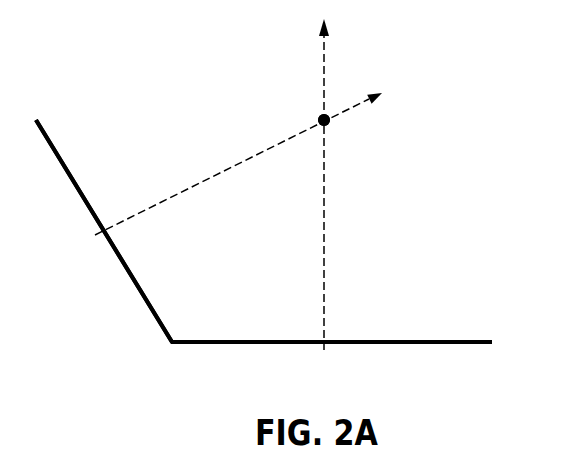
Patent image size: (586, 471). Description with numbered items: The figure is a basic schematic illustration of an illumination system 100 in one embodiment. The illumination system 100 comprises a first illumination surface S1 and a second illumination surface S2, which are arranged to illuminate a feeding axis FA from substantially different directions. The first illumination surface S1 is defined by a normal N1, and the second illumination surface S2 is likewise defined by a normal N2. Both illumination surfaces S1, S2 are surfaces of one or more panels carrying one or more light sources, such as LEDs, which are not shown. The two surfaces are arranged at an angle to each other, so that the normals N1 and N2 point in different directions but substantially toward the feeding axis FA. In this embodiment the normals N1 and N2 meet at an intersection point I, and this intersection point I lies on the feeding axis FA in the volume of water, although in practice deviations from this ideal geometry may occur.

The illumination system 100 is at (459, 139).
The first illumination surface S1 is at (335, 341).
The second illumination surface S2 is at (108, 230).
The normal N1 is at (342, 184).
The normal N2 is at (238, 164).
The intersection point I is at (319, 110).
The feeding axis FA is at (330, 125).